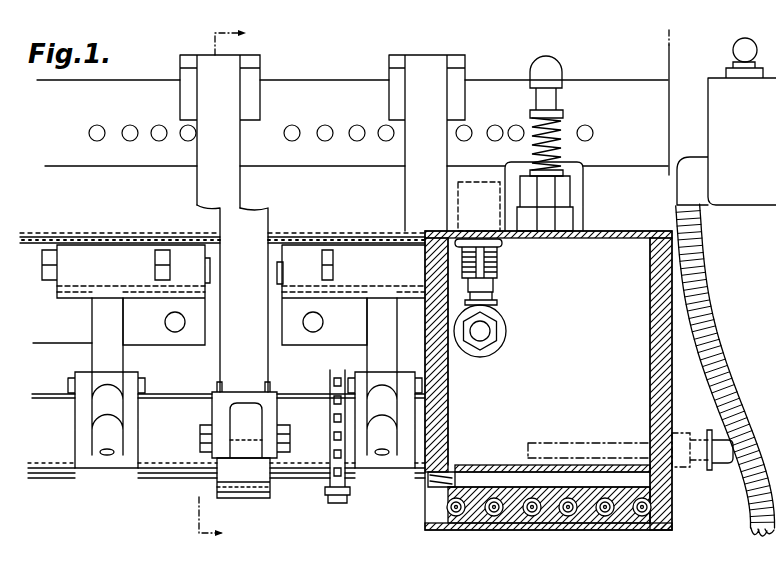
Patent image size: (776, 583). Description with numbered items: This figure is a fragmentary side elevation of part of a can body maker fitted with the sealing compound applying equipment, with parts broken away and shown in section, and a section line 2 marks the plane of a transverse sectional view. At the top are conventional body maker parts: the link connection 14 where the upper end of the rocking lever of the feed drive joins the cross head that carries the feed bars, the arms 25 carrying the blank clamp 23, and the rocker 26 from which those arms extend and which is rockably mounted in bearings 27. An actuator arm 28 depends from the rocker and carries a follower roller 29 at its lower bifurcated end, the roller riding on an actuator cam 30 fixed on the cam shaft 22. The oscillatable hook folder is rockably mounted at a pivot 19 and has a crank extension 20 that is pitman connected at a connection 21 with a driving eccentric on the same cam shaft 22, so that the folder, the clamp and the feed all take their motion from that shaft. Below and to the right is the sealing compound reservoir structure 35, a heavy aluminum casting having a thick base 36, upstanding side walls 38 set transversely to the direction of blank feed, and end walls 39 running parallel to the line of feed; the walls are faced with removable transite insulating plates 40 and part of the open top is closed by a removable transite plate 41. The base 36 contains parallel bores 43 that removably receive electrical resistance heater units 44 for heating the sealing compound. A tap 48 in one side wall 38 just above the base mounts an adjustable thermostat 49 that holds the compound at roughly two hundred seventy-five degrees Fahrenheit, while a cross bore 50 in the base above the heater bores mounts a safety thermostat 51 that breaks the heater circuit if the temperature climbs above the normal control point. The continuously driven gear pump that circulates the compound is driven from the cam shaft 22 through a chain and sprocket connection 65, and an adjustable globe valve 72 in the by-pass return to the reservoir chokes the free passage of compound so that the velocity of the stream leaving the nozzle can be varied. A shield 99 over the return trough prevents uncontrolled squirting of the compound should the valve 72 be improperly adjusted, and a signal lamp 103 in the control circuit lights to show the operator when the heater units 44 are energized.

The section line 2- 2 is at (235, 291).
The link connection 14 is at (492, 258).
The folder rockable mounting 19 is at (275, 286).
The crank extension 20 is at (346, 252).
The pitman connection 21 is at (375, 357).
The cam shaft 22 is at (310, 470).
The blank clamp 23 is at (313, 68).
The arms 25 is at (205, 97).
The rocker 26 is at (373, 175).
The bearings 27 is at (592, 152).
The actuator arm 28 is at (230, 370).
The follower roller 29 is at (233, 418).
The actuator cam 30 is at (225, 484).
The sealing compound reservoir structure 35 is at (682, 340).
The reservoir bottom 36 is at (482, 516).
The reservoir side walls 38 is at (663, 377).
The end walls 39 is at (633, 293).
The transite insulating plates 40 is at (677, 400).
The transite plate 41 is at (620, 232).
The parallel bores 43 is at (535, 516).
The electrical resistance heater units 44 is at (440, 498).
The tap 48 is at (655, 431).
The adjustable thermostat 49 is at (560, 452).
The cross bore 50 is at (512, 463).
The safety thermostat 51 is at (470, 477).
The chain and sprocket connection 65 is at (340, 503).
The adjustable globe valve 72 is at (503, 313).
The shield 99 is at (474, 212).
The signal lamp 103 is at (731, 50).